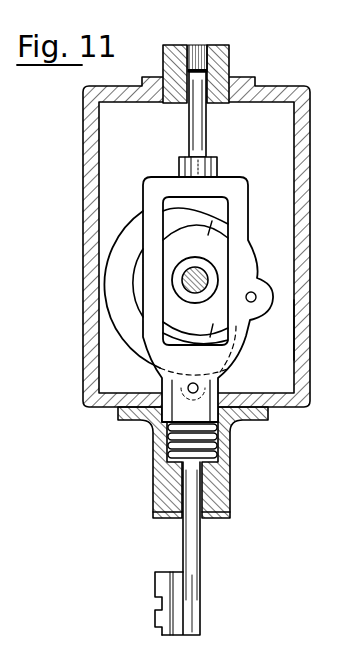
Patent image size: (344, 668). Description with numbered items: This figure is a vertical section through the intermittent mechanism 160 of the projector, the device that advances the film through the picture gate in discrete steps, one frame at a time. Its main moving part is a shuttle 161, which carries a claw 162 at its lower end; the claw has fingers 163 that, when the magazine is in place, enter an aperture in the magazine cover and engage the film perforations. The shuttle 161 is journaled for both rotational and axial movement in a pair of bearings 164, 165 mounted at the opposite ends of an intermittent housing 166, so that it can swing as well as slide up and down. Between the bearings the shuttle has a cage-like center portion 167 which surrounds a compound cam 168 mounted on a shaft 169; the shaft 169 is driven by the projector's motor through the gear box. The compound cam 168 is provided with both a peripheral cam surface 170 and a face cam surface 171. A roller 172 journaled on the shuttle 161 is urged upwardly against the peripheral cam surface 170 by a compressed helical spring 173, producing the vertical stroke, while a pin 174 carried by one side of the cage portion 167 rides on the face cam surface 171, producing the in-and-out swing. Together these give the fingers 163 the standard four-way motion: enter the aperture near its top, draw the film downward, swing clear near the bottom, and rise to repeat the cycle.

The intermittent mechanism 160 is at (284, 84).
The shuttle 161 is at (218, 166).
The claw 162 is at (184, 629).
The fingers 163 is at (159, 572).
The bearing 164 is at (200, 48).
The bearing 165 is at (200, 489).
The intermittent housing 166 is at (302, 326).
The cage-like center portion 167 is at (248, 207).
The compound cam 168 is at (126, 243).
The shaft 169 is at (188, 295).
The peripheral cam surface 170 is at (122, 341).
The face cam surface 171 is at (220, 234).
The roller 172 is at (199, 387).
The compressed helical spring 173 is at (219, 440).
The pin 174 is at (255, 294).